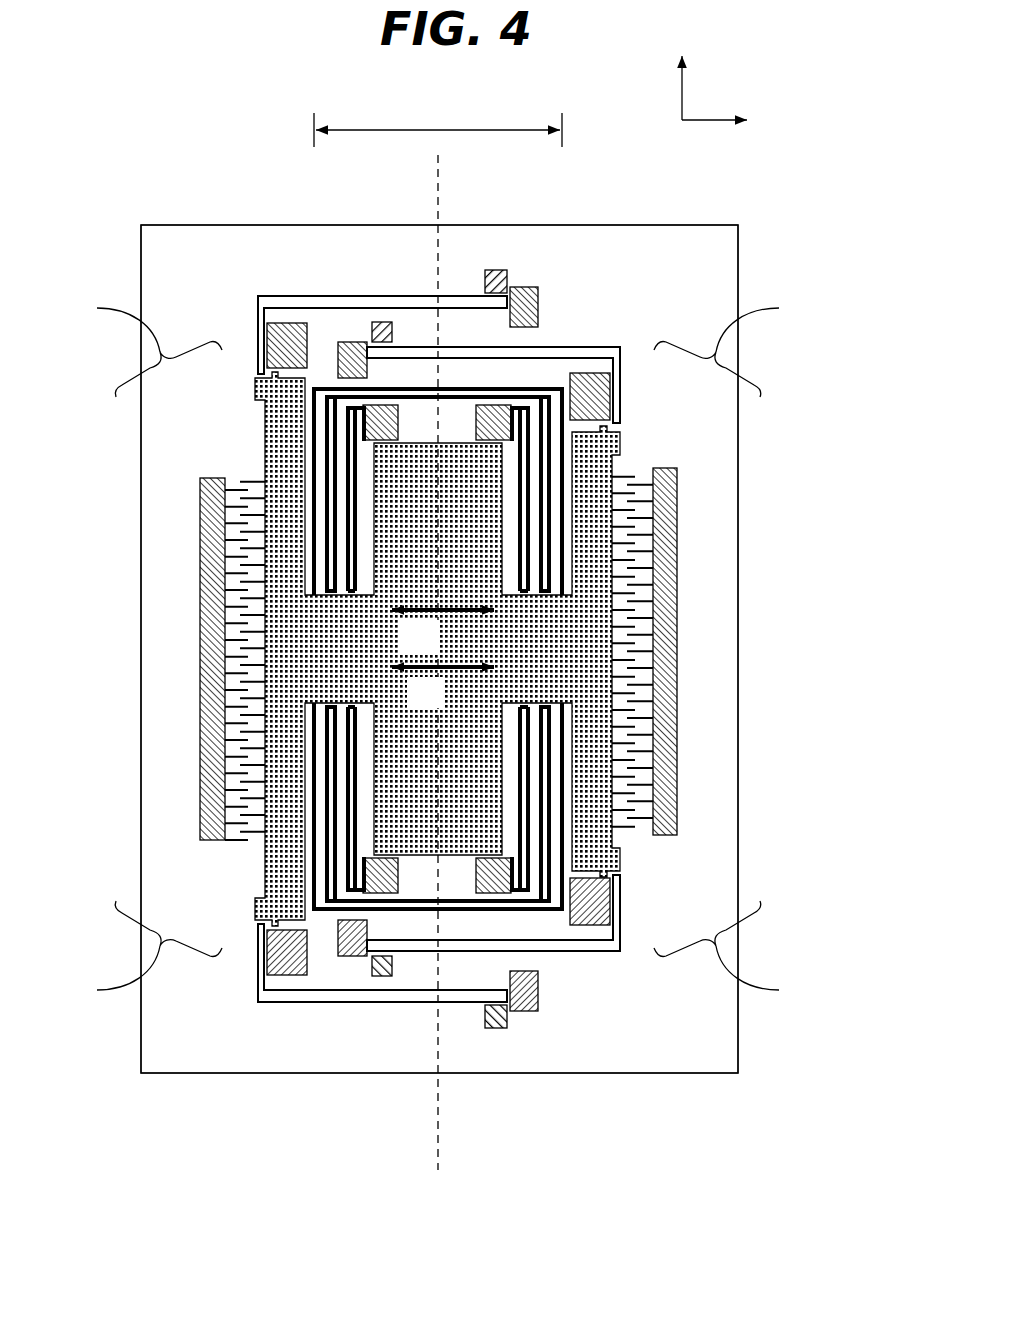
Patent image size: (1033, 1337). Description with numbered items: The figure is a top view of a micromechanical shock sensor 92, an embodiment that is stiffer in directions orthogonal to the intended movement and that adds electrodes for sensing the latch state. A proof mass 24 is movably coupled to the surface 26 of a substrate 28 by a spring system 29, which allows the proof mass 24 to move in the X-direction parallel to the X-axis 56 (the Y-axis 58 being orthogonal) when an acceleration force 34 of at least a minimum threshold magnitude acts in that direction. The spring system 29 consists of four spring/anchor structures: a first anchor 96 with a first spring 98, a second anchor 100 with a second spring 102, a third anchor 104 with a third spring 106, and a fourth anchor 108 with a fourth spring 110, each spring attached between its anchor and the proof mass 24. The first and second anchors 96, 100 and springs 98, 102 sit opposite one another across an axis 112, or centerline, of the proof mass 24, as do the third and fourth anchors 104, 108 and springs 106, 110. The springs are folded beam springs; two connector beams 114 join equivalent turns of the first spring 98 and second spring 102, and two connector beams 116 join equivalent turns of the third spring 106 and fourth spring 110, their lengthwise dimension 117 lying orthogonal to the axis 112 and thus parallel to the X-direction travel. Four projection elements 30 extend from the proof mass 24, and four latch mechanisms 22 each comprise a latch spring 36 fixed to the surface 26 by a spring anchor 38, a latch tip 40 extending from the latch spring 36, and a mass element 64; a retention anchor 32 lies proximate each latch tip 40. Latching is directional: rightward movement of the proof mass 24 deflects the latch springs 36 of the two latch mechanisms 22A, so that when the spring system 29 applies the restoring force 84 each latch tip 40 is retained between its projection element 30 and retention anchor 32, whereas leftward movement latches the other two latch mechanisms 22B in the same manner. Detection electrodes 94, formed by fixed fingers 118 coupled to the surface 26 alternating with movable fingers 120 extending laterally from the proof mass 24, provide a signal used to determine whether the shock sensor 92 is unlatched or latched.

The latch mechanism 22 is at (439, 639).
The latch mechanism 22A is at (609, 323).
The latch mechanism 22B is at (266, 268).
The proof mass 24 is at (290, 530).
The surface 26 is at (171, 254).
The substrate 28 is at (185, 225).
The spring system 29 is at (438, 652).
The projection element 30 is at (272, 922).
The retention anchor 32 is at (283, 965).
The acceleration force 34 is at (460, 612).
The latch spring 36 is at (402, 1000).
The spring anchor 38 is at (520, 905).
The latch tip 40 is at (258, 925).
The X-axis 56 is at (704, 120).
The Y-axis 58 is at (682, 80).
The mass element 64 is at (505, 1000).
The restoring force 84 is at (467, 670).
The micromechanical shock sensor 92 is at (317, 97).
The detection electrodes 94 is at (188, 605).
The first anchor 96 is at (375, 425).
The first spring 98 is at (330, 452).
The second anchor 100 is at (547, 463).
The second spring 102 is at (614, 440).
The third anchor 104 is at (375, 878).
The third spring 106 is at (330, 860).
The fourth anchor 108 is at (545, 832).
The fourth spring 110 is at (618, 862).
The axis 112 is at (441, 207).
The connector beams 114 is at (505, 402).
The connector beams 116 is at (518, 903).
The lengthwise dimension 117 is at (467, 130).
The fixed fingers 118 is at (240, 680).
The movable fingers 120 is at (262, 715).